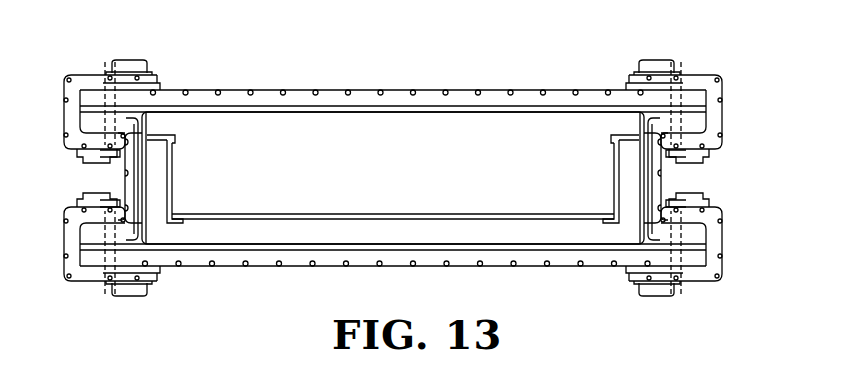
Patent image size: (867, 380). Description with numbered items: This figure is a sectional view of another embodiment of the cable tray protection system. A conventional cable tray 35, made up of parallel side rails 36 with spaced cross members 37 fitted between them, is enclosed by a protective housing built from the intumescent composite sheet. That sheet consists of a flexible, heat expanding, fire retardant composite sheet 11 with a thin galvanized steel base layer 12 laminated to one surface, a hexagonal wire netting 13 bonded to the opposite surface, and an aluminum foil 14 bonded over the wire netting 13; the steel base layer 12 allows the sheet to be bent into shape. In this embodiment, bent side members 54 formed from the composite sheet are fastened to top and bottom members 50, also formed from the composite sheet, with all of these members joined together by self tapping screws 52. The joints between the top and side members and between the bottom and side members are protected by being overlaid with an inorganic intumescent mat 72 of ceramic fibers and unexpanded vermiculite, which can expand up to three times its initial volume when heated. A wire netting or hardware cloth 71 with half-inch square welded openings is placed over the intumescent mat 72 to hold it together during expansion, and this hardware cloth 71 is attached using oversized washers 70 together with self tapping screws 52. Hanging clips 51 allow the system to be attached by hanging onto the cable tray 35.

The fire retardant composite sheet 11 is at (490, 93).
The galvanized steel base layer 12 is at (508, 110).
The hexagonal wire netting 13 is at (380, 88).
The aluminum foil 14 is at (400, 88).
The cable tray 35 is at (391, 207).
The side rails 36 is at (614, 177).
The cross members 37 is at (452, 213).
The top and bottom members 50 is at (448, 80).
The hanging clips 51 is at (176, 139).
The self tapping screws 52 is at (124, 62).
The bent side members 54 is at (114, 178).
The oversized washers 70 is at (148, 70).
The wire netting (hardware cloth) 71 is at (71, 75).
The inorganic intumescent mat 72 is at (162, 82).